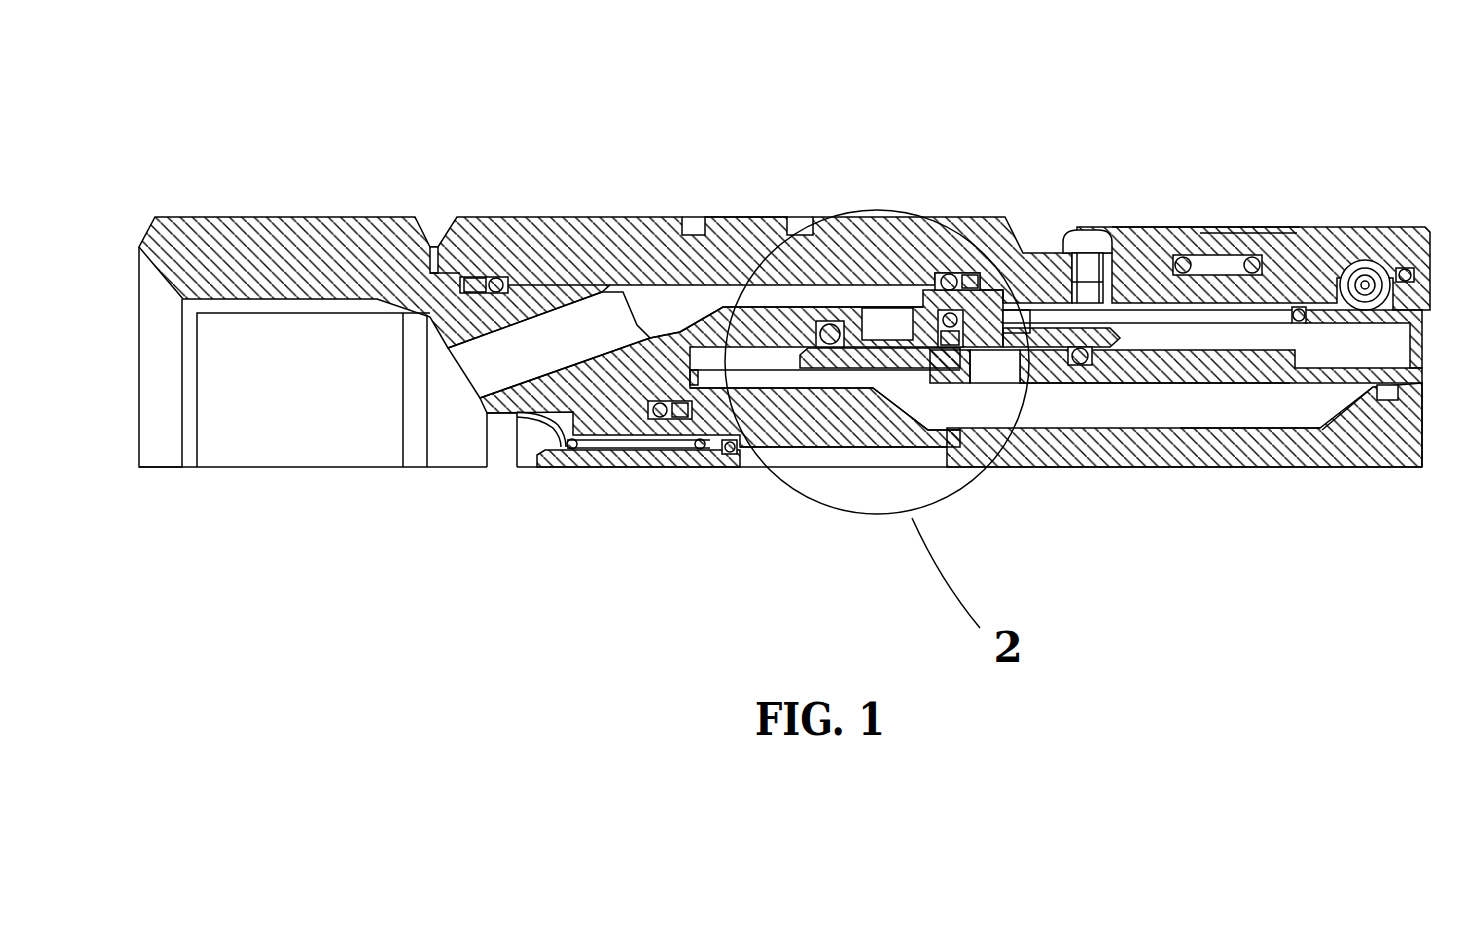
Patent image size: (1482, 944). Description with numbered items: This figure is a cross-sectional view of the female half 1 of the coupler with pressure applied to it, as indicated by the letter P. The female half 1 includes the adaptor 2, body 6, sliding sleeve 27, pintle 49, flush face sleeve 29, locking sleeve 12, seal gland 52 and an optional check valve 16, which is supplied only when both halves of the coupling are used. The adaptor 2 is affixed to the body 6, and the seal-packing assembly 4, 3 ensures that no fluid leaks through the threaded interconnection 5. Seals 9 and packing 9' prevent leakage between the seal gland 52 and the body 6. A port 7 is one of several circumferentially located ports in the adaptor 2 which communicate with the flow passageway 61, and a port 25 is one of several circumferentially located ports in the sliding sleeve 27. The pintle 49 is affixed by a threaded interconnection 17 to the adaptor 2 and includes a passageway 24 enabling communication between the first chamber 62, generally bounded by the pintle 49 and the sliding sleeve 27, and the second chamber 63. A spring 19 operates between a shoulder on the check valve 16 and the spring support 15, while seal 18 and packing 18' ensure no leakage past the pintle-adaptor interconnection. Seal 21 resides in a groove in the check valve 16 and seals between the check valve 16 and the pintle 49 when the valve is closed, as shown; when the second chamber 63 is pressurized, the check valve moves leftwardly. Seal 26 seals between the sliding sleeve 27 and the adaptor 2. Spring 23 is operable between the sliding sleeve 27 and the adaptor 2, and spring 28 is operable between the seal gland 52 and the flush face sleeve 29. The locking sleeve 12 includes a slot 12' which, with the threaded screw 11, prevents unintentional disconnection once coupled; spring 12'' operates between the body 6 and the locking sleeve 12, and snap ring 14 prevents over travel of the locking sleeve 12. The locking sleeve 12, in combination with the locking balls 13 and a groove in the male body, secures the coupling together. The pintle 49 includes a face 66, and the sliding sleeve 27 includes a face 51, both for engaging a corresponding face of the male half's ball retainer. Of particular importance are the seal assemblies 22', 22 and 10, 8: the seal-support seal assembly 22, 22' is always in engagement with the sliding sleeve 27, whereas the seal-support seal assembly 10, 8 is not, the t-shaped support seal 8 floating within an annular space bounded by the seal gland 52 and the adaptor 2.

The female half 1 is at (903, 156).
The adaptor 2 is at (262, 253).
The seal-packing assembly 3 is at (470, 280).
The seal-packing assembly 4 is at (493, 283).
The threaded interconnection 5 is at (596, 283).
The body 6 is at (758, 250).
The port 7 is at (745, 325).
The t-shaped support seal 8 is at (887, 323).
The seals 9 is at (957, 197).
The packing 9' is at (997, 173).
The seal 10 is at (1015, 318).
The threaded screw 11 is at (1087, 242).
The locking sleeve 12 is at (1206, 145).
The slot 12' is at (1203, 148).
The spring 12'' is at (1227, 218).
The locking balls 13 is at (1345, 270).
The snap ring 14 is at (1405, 270).
The spring support 15 is at (520, 420).
The check valve 16 is at (558, 437).
The threaded interconnection 17 is at (612, 415).
The seal 18 is at (657, 512).
The packing 18' is at (680, 528).
The spring 19 is at (700, 447).
The seal 21 is at (728, 452).
The seal 22 is at (825, 461).
The support seal 22' is at (849, 419).
The spring 23 is at (873, 420).
The passageway 24 is at (940, 395).
The port 25 is at (1000, 390).
The seal 26 is at (1080, 365).
The sliding sleeve 27 is at (1227, 372).
The spring 28 is at (1300, 322).
The flush face sleeve 29 is at (1325, 440).
The pintle 49 is at (1177, 447).
The face 51 is at (1415, 352).
The seal gland 52 is at (1018, 375).
The flow passageway 61 is at (549, 345).
The first chamber 62 is at (1212, 366).
The second chamber 63 is at (790, 455).
The face 66 is at (1425, 408).
The pressure P is at (280, 400).